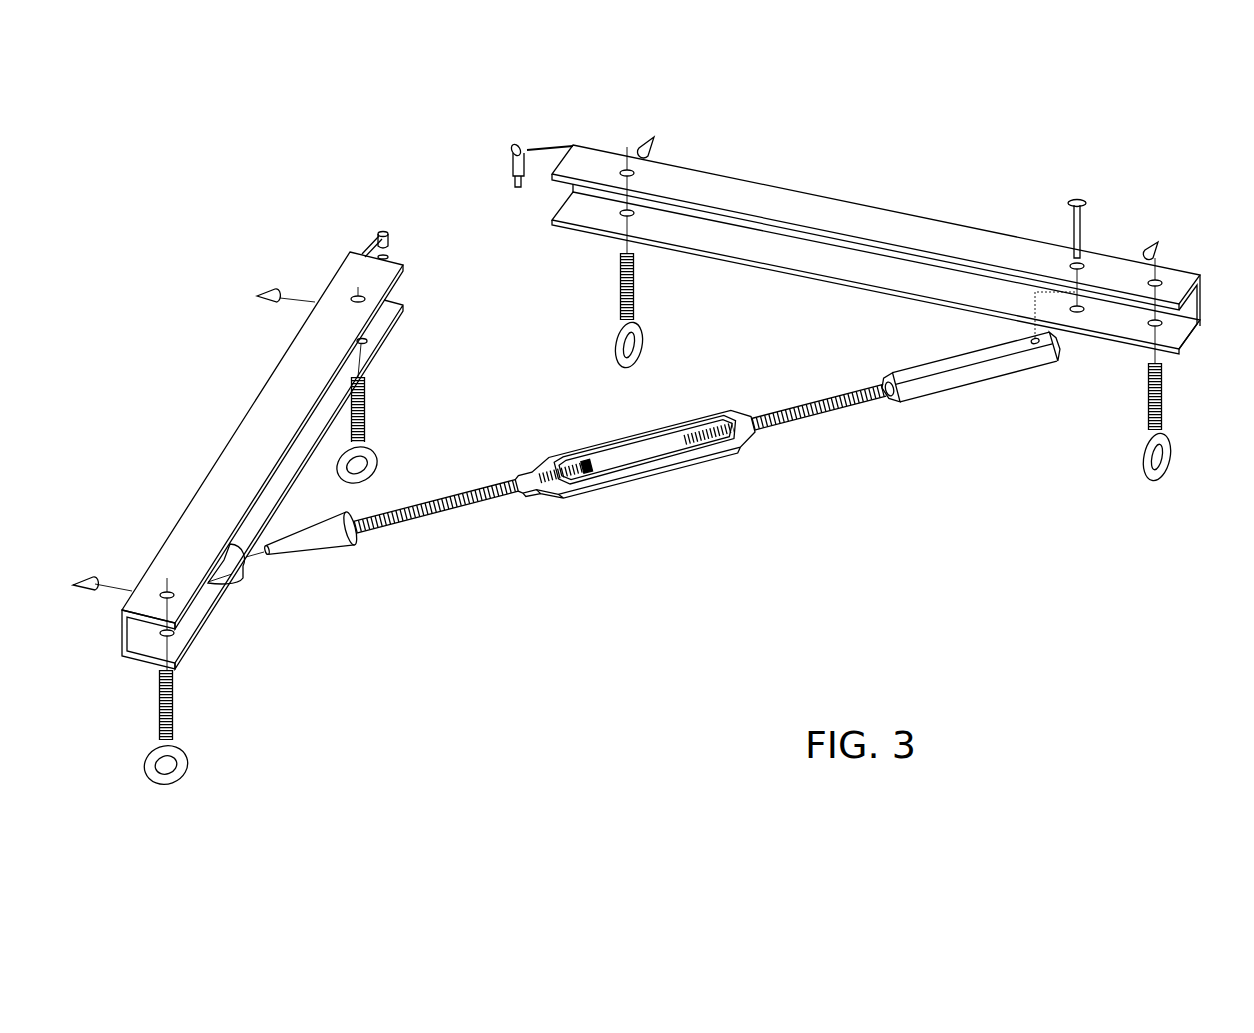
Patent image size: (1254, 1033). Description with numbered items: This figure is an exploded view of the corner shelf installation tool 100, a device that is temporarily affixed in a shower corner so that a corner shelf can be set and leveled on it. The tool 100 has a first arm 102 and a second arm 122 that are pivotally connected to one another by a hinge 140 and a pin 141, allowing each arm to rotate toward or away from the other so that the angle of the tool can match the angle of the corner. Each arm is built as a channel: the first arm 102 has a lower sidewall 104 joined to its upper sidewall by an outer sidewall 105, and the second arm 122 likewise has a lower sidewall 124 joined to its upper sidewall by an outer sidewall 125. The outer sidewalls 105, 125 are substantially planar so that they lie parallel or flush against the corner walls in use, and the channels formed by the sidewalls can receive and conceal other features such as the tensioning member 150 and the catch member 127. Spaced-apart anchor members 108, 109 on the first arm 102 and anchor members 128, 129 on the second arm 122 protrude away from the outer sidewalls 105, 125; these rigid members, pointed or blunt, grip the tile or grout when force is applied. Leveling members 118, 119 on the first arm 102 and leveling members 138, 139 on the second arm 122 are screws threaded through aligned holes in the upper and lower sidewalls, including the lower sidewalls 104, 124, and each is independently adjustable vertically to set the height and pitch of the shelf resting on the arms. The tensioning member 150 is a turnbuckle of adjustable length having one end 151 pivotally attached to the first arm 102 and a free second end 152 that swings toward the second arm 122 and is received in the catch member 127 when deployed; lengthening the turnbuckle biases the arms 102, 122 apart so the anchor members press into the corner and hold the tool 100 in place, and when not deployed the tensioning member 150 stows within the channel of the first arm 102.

The corner shelf installation tool 100 is at (403, 160).
The first arm 102 is at (848, 213).
The lower sidewall 104 is at (820, 266).
The outer sidewall 105 is at (1193, 291).
The anchor member 108 is at (1153, 246).
The anchor member 109 is at (648, 142).
The leveling member 118 is at (1148, 408).
The leveling member 119 is at (622, 288).
The second arm 122 is at (215, 476).
The lower sidewall 124 is at (190, 626).
The outer sidewall 125 is at (132, 630).
The catch member 127 is at (232, 584).
The anchor member 128 is at (88, 578).
The anchor member 129 is at (272, 288).
The leveling member 138 is at (172, 713).
The leveling member 139 is at (370, 418).
The hinge 140 is at (382, 232).
The pin 141 is at (517, 147).
The tensioning member 150 is at (652, 470).
The one end of tensioning member 151 is at (952, 371).
The second end of tensioning member 152 is at (323, 548).